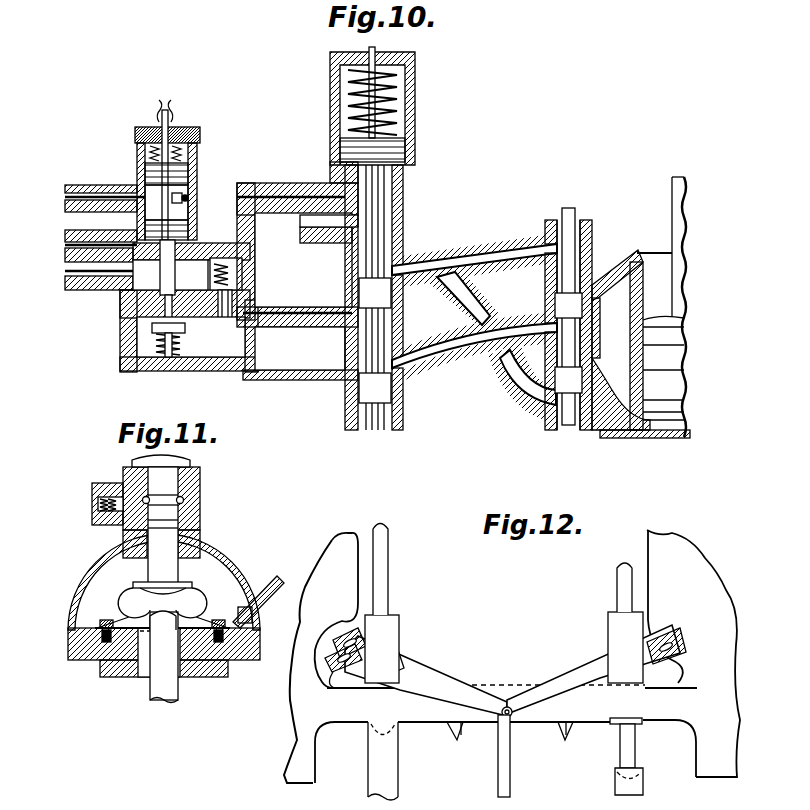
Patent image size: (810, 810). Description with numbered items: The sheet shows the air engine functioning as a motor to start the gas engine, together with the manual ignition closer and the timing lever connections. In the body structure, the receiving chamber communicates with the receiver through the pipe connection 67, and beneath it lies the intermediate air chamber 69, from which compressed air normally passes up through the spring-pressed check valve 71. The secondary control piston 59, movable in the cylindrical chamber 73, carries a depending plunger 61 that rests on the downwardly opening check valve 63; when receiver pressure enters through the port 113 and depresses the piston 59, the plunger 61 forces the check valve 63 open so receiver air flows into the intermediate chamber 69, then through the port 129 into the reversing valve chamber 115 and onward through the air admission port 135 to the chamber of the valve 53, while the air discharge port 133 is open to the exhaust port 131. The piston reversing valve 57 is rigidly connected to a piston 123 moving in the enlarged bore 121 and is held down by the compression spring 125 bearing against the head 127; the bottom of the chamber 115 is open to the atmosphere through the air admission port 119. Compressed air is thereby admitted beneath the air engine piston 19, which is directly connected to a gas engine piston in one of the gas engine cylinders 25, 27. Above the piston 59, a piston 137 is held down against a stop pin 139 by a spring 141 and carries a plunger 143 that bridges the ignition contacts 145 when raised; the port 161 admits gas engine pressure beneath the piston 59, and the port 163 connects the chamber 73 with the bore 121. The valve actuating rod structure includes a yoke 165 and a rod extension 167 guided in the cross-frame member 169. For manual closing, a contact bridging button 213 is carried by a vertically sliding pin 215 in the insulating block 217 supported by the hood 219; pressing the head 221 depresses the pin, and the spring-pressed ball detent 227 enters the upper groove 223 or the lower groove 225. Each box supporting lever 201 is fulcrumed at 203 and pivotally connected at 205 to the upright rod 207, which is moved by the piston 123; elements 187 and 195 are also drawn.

In FIG. 10, the reciprocatory piston 19 is at (675, 360).
In FIG. 10, the valve 53 is at (578, 300).
In FIG. 10, the piston reversing valve 57 is at (367, 290).
In FIG. 10, the piston 59 is at (192, 230).
In FIG. 10, the plunger 61 is at (170, 282).
In FIG. 10, the check valve 63 is at (182, 330).
In FIG. 10, the pipe connection 67 is at (65, 278).
In FIG. 10, the intermediate air chamber 69 is at (232, 350).
In FIG. 10, the check valve 71 is at (240, 297).
In FIG. 10, the cylindrical chamber 73 is at (188, 203).
In FIG. 10, the port 113 is at (65, 198).
In FIG. 10, the cylindrical chamber 115 is at (378, 240).
In FIG. 10, the air admission port 119 is at (382, 420).
In FIG. 10, the enlarged bore 121 is at (400, 130).
In FIG. 10, the piston 123 is at (405, 148).
In FIG. 10, the compression spring 125 is at (405, 103).
In FIG. 10, the head 127 is at (380, 62).
In FIG. 10, the port 129 is at (305, 320).
In FIG. 10, the exhaust port 131 is at (303, 260).
In FIG. 10, the air discharge port 133 is at (432, 262).
In FIG. 10, the air admission port 135 is at (462, 352).
In FIG. 10, the piston 137 is at (188, 170).
In FIG. 10, the stop pin 139 is at (172, 200).
In FIG. 10, the spring 141 is at (190, 152).
In FIG. 10, the plunger 143 is at (180, 135).
In FIG. 11, the plunger 143 is at (150, 690).
In FIG. 10, the contacts 145 is at (161, 166).
In FIG. 11, the contacts 145 is at (128, 605).
In FIG. 10, the port 161 is at (65, 246).
In FIG. 10, the port 163 is at (305, 220).
In FIG. 12, the yoke or bifurcated portion 165 is at (392, 767).
In FIG. 12, the rod extension 167 is at (388, 572).
In FIG. 12, the cross-frame member 169 is at (482, 688).
In FIG. 12, the lug 187 is at (450, 730).
In FIG. 12, the block 195 is at (392, 638).
In FIG. 12, the box supporting lever 201 is at (420, 680).
In FIG. 12, the fulcrum 203 is at (330, 683).
In FIG. 12, the pivotal connection 205 is at (510, 706).
In FIG. 12, the upright rod 207 is at (510, 773).
In FIG. 11, the contact bridging button 213 is at (172, 590).
In FIG. 11, the vertically sliding pin 215 is at (148, 572).
In FIG. 11, the block 217 is at (200, 506).
In FIG. 11, the hood 219 is at (235, 568).
In FIG. 11, the head 221 is at (178, 462).
In FIG. 11, the upper circumferential groove 223 is at (198, 492).
In FIG. 11, the lower circumferential groove 225 is at (200, 528).
In FIG. 11, the spring-pressed ball detent 227 is at (125, 482).
In FIG. 12, the gas engine cylinder 27 is at (325, 565).
In FIG. 12, the gas engine cylinder 25 is at (690, 577).